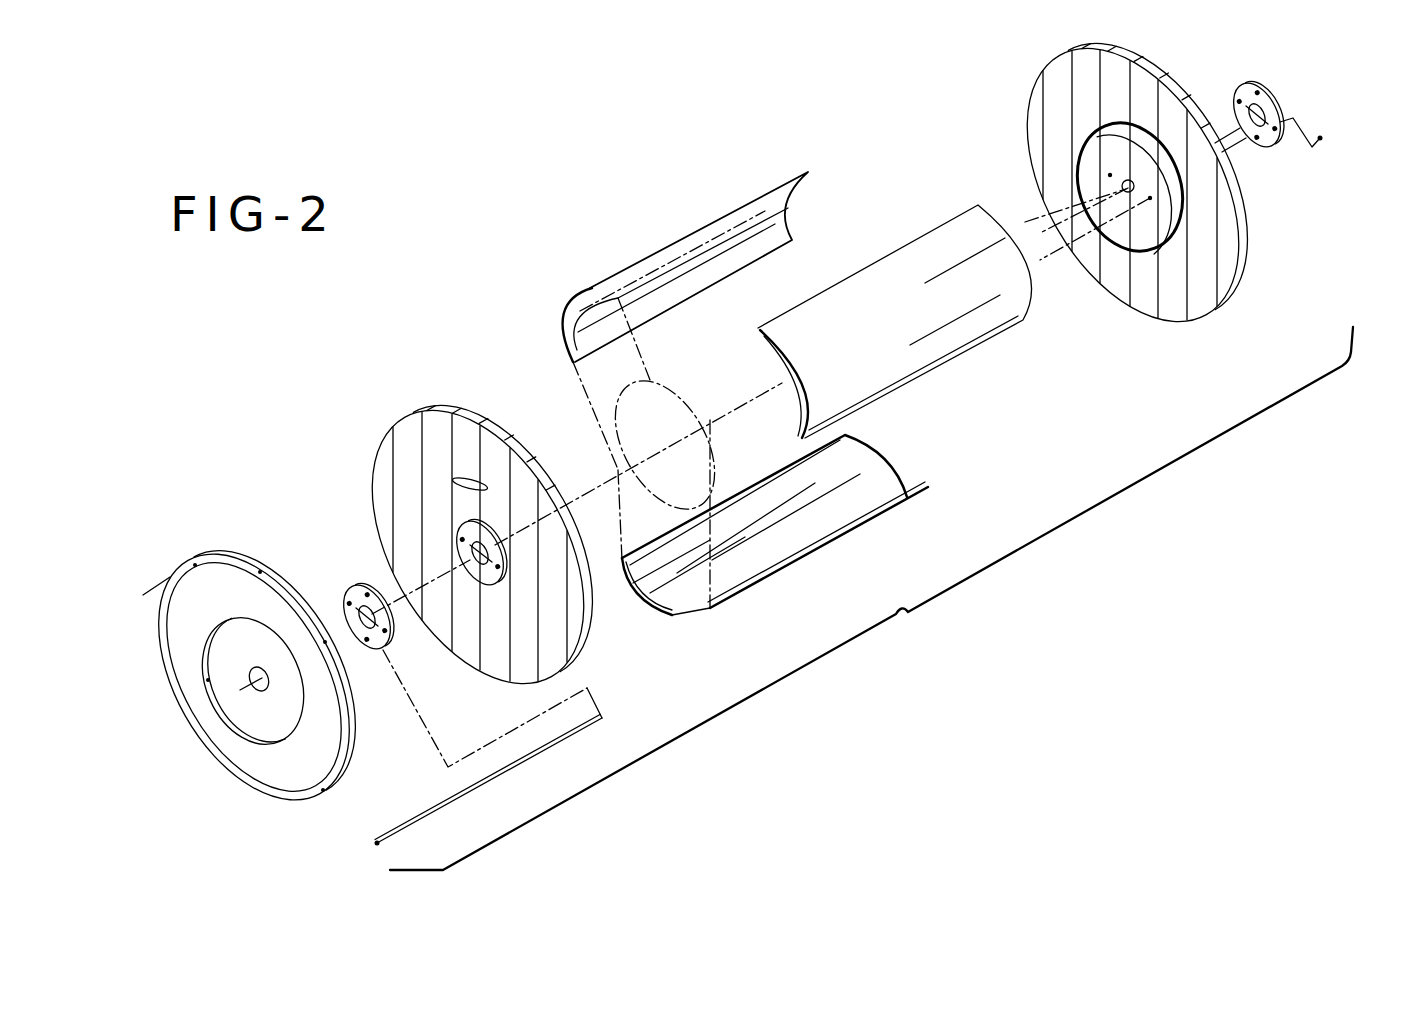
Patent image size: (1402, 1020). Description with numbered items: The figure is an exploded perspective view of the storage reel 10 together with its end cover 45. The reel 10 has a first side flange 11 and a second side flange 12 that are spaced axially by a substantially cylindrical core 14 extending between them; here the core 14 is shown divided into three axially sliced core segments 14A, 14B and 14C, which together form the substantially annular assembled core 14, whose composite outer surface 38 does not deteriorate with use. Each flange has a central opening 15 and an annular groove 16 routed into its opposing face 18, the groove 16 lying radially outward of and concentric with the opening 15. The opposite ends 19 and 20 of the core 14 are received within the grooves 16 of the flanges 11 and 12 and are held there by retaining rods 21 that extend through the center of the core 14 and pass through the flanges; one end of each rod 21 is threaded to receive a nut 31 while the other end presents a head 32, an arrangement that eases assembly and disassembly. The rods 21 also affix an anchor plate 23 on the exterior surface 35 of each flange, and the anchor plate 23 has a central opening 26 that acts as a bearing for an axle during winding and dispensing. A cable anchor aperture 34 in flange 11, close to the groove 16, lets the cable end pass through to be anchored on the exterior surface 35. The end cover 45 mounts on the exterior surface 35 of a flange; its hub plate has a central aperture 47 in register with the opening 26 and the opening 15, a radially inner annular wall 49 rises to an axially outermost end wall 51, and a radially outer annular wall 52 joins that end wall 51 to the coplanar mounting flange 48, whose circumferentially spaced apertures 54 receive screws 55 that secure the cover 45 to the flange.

The storage reel 10 is at (871, 598).
The first side flange 11 is at (474, 544).
The second side flange 12 is at (1124, 191).
The core 14 is at (617, 410).
The core segment 14A is at (820, 176).
The core segment 14B is at (914, 371).
The core segment 14C is at (770, 577).
The central opening 15 is at (482, 562).
The annular groove 16 is at (1143, 256).
The opposing face 18 is at (1200, 300).
The end of core 19 is at (565, 326).
The end of core 20 is at (793, 222).
The retaining rod 21 is at (532, 760).
The anchor plate 23 is at (348, 597).
The central opening 26 is at (1248, 140).
The nut 31 is at (583, 725).
The head 32 is at (1322, 140).
The cable anchor aperture 34 is at (452, 478).
The exterior surface 35 is at (400, 508).
The outer surface 38 is at (738, 218).
The end cover 45 is at (268, 760).
The central aperture 47 is at (251, 688).
The mounting flange 48 is at (313, 800).
The radially inner annular wall 49 is at (207, 667).
The end wall 51 is at (203, 717).
The radially outer annular wall 52 is at (243, 572).
The aperture 54 is at (353, 735).
The screw 55 is at (143, 595).